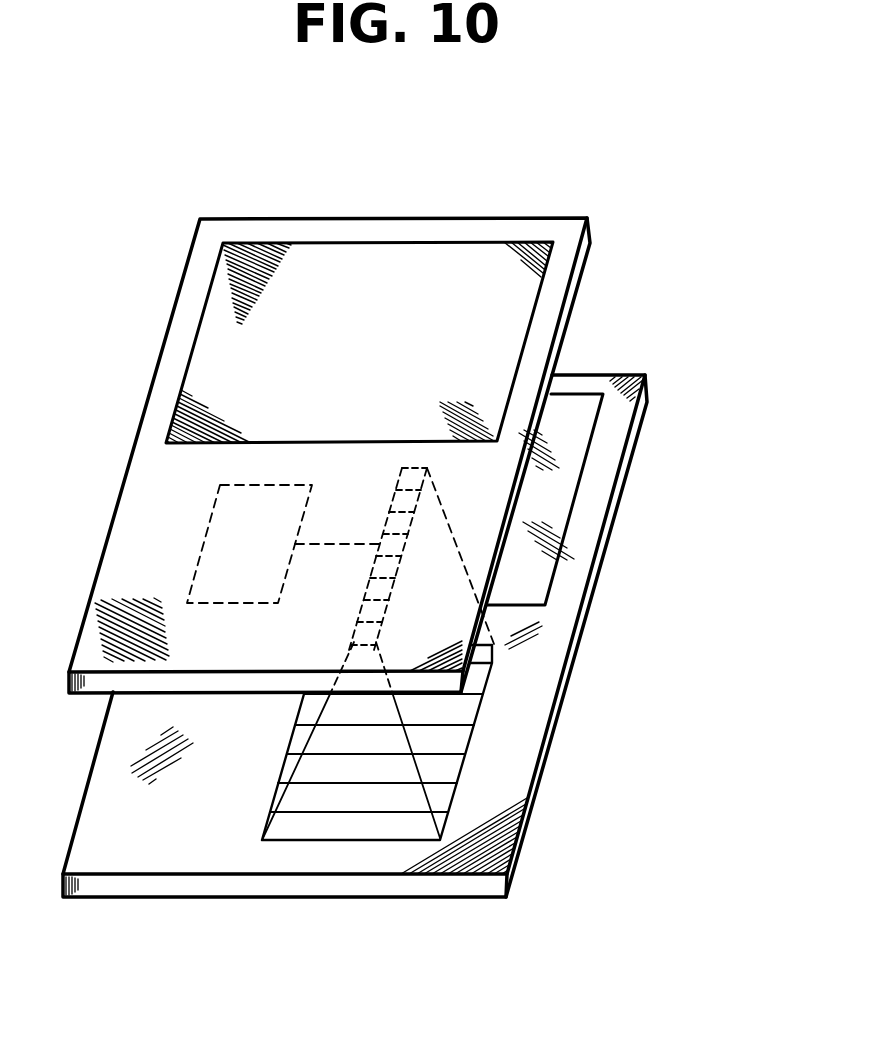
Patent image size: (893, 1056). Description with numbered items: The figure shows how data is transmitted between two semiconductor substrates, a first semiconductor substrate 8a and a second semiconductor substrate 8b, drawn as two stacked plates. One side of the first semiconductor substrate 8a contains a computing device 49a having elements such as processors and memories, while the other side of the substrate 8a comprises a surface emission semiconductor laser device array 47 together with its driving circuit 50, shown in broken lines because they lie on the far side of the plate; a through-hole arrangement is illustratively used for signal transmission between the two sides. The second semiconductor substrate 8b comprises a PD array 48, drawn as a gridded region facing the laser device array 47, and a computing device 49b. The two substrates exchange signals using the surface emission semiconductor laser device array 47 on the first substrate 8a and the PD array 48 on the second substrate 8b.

The first semiconductor substrate 8a is at (557, 276).
The second semiconductor substrate 8b is at (580, 551).
The computing device 49a is at (421, 256).
The computing device 49b is at (579, 437).
The surface emission semiconductor laser device array 47 is at (377, 608).
The PD array 48 is at (452, 742).
The driving circuit 50 is at (213, 534).